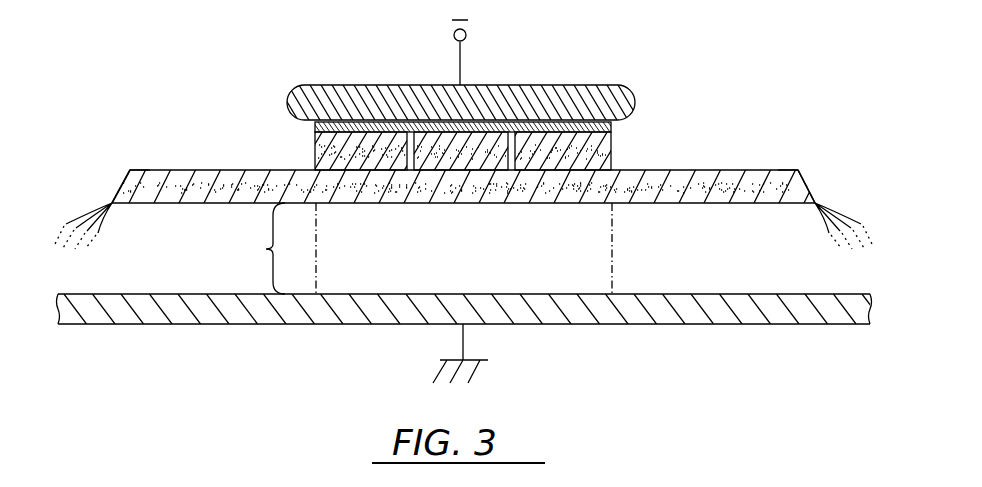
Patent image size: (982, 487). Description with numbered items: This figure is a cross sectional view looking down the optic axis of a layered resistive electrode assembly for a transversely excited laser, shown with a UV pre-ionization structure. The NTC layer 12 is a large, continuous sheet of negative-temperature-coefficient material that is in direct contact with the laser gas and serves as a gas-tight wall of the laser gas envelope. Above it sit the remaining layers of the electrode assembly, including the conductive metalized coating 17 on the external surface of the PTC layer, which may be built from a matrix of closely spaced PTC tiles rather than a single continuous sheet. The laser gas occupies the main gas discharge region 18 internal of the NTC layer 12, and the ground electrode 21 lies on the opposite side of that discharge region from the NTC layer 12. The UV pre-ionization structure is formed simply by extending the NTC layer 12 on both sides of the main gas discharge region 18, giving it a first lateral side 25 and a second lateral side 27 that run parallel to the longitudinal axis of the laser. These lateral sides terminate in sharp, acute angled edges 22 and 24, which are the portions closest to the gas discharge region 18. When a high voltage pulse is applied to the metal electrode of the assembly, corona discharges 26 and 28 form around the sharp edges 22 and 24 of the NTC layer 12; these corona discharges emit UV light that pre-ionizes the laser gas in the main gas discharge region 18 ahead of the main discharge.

The NTC layer 12 is at (657, 170).
The conductive metalized coating 17 is at (367, 123).
The main gas discharge region 18 is at (266, 249).
The ground electrode 21 is at (655, 313).
The sharp acute angled edge 22 is at (112, 201).
The sharp acute angled edge 24 is at (815, 200).
The first lateral side 25 is at (122, 170).
The corona discharge 26 is at (105, 202).
The second lateral side 27 is at (807, 168).
The corona discharge 28 is at (845, 200).